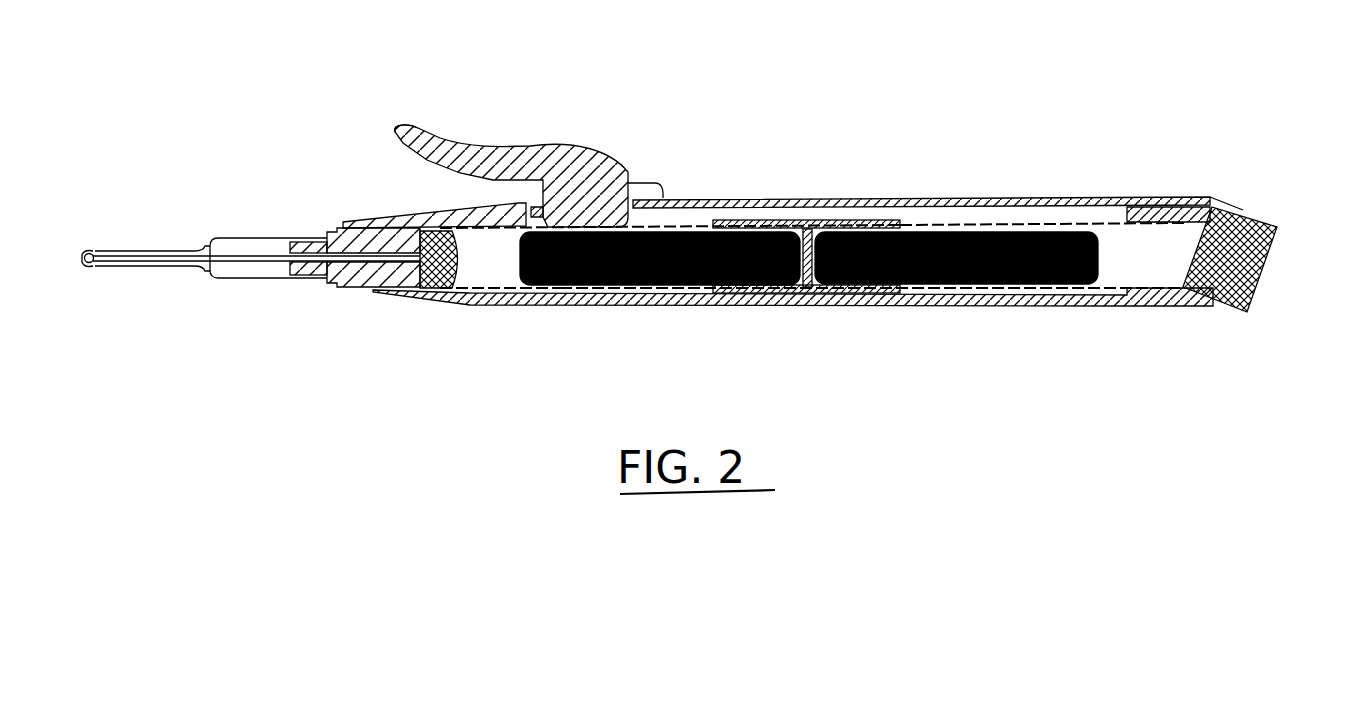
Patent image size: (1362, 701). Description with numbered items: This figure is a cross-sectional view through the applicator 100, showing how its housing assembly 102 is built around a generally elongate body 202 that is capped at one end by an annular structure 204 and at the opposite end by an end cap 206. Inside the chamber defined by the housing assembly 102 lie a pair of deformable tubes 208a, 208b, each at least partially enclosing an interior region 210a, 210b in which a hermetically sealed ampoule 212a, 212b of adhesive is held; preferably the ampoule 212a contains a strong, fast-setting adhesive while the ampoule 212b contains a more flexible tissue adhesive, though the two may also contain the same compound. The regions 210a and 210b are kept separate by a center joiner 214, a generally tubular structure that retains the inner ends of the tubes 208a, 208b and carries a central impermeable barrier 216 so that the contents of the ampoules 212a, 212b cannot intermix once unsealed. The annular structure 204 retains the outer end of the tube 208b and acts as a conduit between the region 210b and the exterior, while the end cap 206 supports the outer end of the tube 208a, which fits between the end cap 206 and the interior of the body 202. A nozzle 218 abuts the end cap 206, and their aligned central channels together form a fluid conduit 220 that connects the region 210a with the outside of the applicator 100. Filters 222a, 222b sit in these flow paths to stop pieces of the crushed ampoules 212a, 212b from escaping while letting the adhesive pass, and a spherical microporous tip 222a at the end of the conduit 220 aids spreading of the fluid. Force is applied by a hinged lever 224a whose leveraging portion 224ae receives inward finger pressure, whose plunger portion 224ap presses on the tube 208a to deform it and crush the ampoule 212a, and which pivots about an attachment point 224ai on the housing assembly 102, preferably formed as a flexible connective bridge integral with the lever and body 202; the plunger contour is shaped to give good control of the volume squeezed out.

The applicator 100 is at (1004, 192).
The housing assembly 102 is at (1054, 197).
The elongate body 202 is at (1067, 305).
The annular structure 204 is at (1182, 202).
The end cap 206 is at (347, 235).
The deformable tube 208a is at (518, 218).
The deformable tube 208b is at (950, 221).
The interior region 210a is at (497, 270).
The interior region 210b is at (1123, 272).
The ampoule 212a is at (700, 226).
The ampoule 212b is at (873, 222).
The center joiner 214 is at (758, 211).
The central impermeable barrier 216 is at (818, 293).
The nozzle 218 is at (250, 240).
The fluid conduit 220 is at (240, 258).
The filter 222a is at (418, 221).
The filter 222b is at (1240, 240).
The hinged lever 224a is at (505, 141).
The leveraging portion 224ae is at (445, 118).
The attachment point 224ai is at (675, 168).
The plunger portion 224ap is at (550, 282).